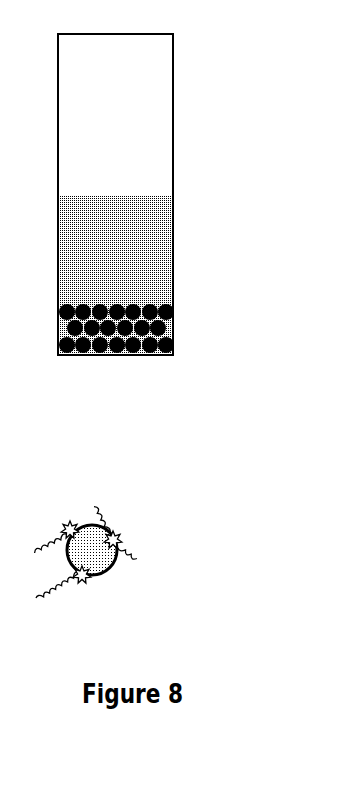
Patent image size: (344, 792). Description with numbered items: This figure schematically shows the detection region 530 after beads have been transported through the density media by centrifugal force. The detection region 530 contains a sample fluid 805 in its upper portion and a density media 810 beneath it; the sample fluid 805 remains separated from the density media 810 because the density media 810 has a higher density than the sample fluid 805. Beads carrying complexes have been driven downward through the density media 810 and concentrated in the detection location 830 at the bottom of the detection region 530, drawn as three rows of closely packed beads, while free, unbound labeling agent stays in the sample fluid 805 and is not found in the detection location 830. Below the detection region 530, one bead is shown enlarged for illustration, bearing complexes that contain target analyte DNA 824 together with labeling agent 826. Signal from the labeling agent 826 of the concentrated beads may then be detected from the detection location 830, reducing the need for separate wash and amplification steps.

The sample fluid 805 is at (153, 162).
The detection region 530 is at (50, 205).
The density media 810 is at (160, 277).
The detection location 830 is at (123, 327).
The DNA (target analyte) 824 is at (138, 561).
The labeling agent 826 is at (121, 535).